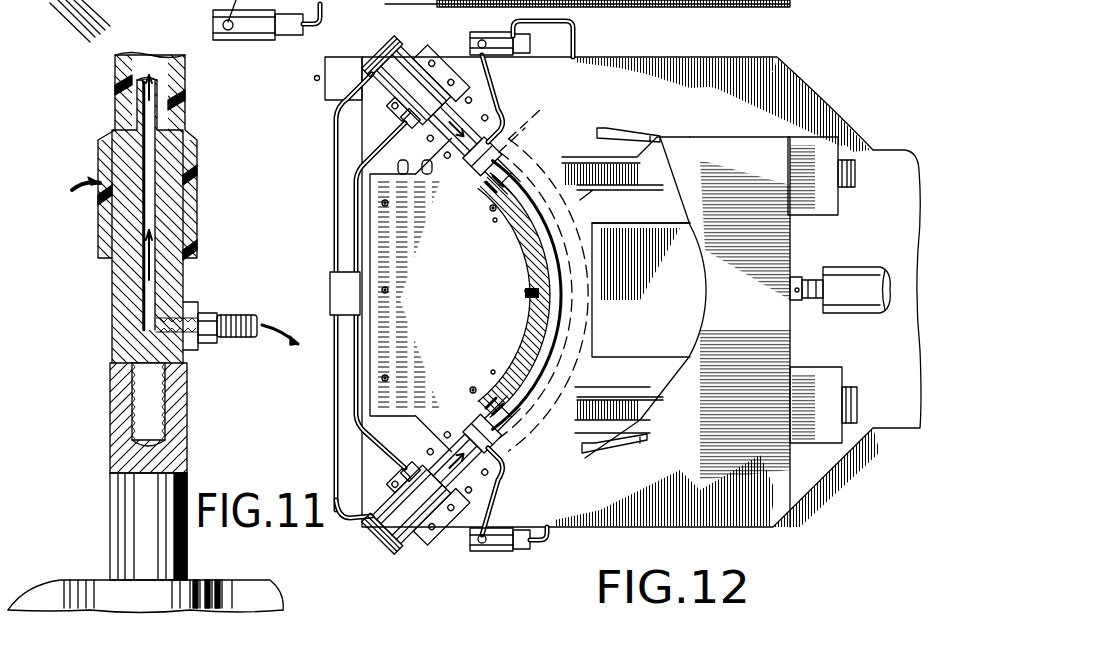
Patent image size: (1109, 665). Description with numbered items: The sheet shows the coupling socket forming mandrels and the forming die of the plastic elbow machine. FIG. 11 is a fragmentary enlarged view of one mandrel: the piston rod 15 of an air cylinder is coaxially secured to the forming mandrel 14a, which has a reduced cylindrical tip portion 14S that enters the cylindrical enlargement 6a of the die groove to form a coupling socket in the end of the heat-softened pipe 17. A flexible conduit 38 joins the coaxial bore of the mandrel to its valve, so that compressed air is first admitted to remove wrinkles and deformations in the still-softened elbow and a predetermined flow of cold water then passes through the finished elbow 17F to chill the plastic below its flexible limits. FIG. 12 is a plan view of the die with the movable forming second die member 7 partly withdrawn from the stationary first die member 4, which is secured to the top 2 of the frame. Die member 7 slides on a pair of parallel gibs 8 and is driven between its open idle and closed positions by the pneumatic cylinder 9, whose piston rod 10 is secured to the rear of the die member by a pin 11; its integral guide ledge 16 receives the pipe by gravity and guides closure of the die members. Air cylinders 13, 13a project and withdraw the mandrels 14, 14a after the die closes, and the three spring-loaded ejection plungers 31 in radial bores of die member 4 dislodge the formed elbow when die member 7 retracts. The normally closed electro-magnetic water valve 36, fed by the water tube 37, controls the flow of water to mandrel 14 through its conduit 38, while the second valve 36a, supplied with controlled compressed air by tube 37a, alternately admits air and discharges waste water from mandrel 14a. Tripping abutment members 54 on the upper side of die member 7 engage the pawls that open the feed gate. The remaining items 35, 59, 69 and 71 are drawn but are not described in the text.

In FIG. 12, the top 2 is at (795, 86).
In FIG. 12, the stationary first die member 4 is at (458, 305).
In FIG. 11, the cylindrical enlargements 6a is at (70, 190).
In FIG. 12, the movable forming second die member 7 is at (753, 299).
In FIG. 12, the gibs 8 is at (623, 190).
In FIG. 12, the pneumatic cylinder 9 is at (856, 268).
In FIG. 12, the piston rod 10 is at (816, 300).
In FIG. 12, the pin 11 is at (798, 276).
In FIG. 11, the air cylinder 13 is at (80, 580).
In FIG. 12, the air cylinder 13 is at (398, 547).
In FIG. 12, the air cylinder 13a is at (432, 54).
In FIG. 11, the mandrel 14 is at (112, 292).
In FIG. 12, the mandrel 14 is at (497, 430).
In FIG. 12, the forming mandrel 14a is at (500, 158).
In FIG. 11, the reduced cylindrical tip portion 14S is at (135, 91).
In FIG. 11, the piston rod 15 is at (110, 455).
In FIG. 12, the piston rod 15 is at (460, 108).
In FIG. 12, the guide ledge 16 is at (657, 290).
In FIG. 11, the pipe 17 is at (183, 90).
In FIG. 12, the finished elbow 17F is at (555, 136).
In FIG. 12, the ejection plungers 31 is at (497, 207).
In FIG. 11, the nut 35 is at (212, 345).
In FIG. 12, the water valve 36 is at (490, 551).
In FIG. 12, the second electro-magnetic valve 36a is at (500, 32).
In FIG. 12, the water tube 37 is at (548, 543).
In FIG. 12, the tube 37a is at (576, 34).
In FIG. 11, the flexible conduit 38 is at (242, 316).
In FIG. 12, the flexible conduit 38 is at (500, 92).
In FIG. 12, the tripping abutment members 54 is at (602, 128).
In FIG. 12, the connector box 59 is at (315, 79).
In FIG. 12, the supply tube 69 is at (334, 132).
In FIG. 12, the tube fitting 71 is at (404, 118).